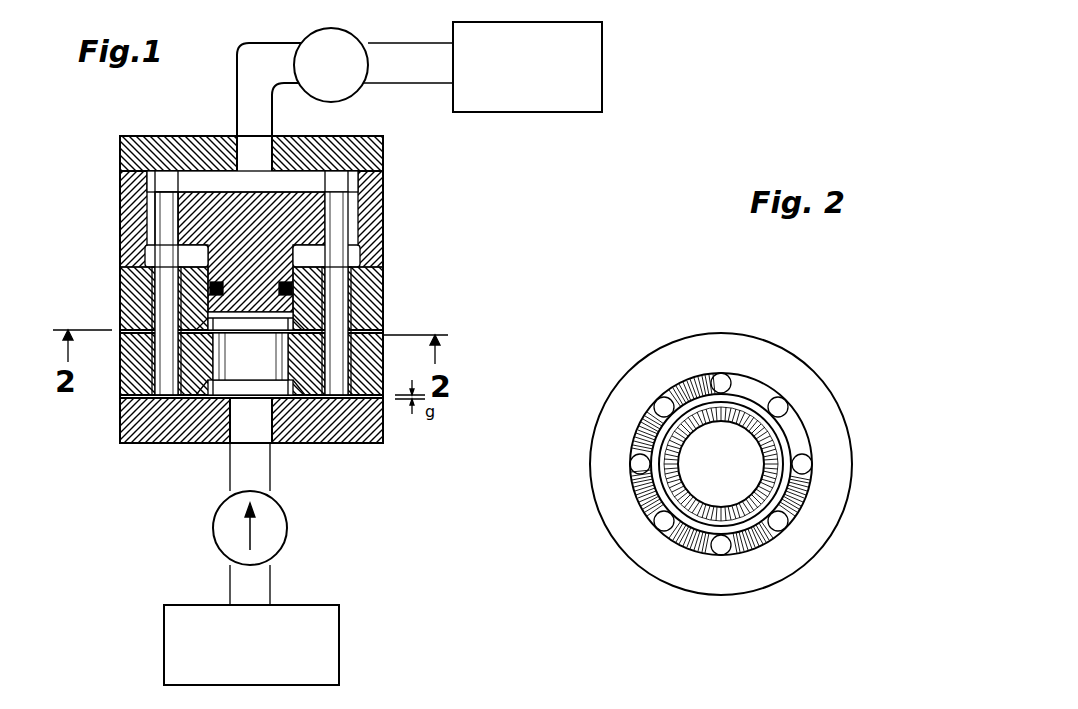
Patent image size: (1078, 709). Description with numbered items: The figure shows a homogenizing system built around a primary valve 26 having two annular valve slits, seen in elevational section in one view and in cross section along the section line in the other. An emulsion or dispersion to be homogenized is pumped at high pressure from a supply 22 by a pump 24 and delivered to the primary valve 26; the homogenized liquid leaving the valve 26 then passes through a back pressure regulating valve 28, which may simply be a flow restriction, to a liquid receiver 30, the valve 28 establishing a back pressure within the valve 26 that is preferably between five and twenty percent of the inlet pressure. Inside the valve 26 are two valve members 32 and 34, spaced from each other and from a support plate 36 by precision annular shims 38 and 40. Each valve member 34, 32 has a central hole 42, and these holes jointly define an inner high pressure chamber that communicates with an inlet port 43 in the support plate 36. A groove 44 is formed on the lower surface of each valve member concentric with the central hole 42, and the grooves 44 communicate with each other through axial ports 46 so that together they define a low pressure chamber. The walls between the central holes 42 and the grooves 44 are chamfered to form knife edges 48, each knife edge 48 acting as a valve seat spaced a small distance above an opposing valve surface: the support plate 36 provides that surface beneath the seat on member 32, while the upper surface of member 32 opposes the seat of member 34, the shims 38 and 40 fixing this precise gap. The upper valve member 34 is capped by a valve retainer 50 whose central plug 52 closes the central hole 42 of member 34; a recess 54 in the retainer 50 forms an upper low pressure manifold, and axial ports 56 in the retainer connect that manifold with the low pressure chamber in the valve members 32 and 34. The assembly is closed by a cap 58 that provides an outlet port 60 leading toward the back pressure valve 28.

In FIG. 1, the supply 22 is at (313, 605).
In FIG. 1, the pump 24 is at (287, 521).
In FIG. 1, the primary valve 26 is at (102, 158).
In FIG. 1, the back pressure regulating valve 28 is at (356, 93).
In FIG. 1, the liquid receiver 30 is at (528, 113).
In FIG. 1, the valve member 32 is at (120, 383).
In FIG. 1, the valve member 34 is at (120, 274).
In FIG. 2, the valve member 34 is at (820, 420).
In FIG. 1, the support plate 36 is at (120, 440).
In FIG. 1, the annular shim 38 is at (120, 336).
In FIG. 1, the annular shim 40 is at (120, 397).
In FIG. 1, the central hole 42 is at (263, 362).
In FIG. 2, the central hole 42 is at (745, 450).
In FIG. 1, the inlet port 43 is at (262, 415).
In FIG. 1, the groove 44 is at (340, 333).
In FIG. 2, the groove 44 is at (760, 395).
In FIG. 1, the axial port 46 is at (335, 300).
In FIG. 2, the axial port 46 is at (663, 407).
In FIG. 1, the knife edge 48 is at (165, 332).
In FIG. 2, the knife edge 48 is at (660, 478).
In FIG. 1, the valve retainer 50 is at (383, 213).
In FIG. 1, the central plug 52 is at (360, 258).
In FIG. 1, the recess 54 is at (328, 183).
In FIG. 1, the axial port 56 is at (165, 220).
In FIG. 1, the cap 58 is at (175, 136).
In FIG. 1, the outlet port 60 is at (247, 152).